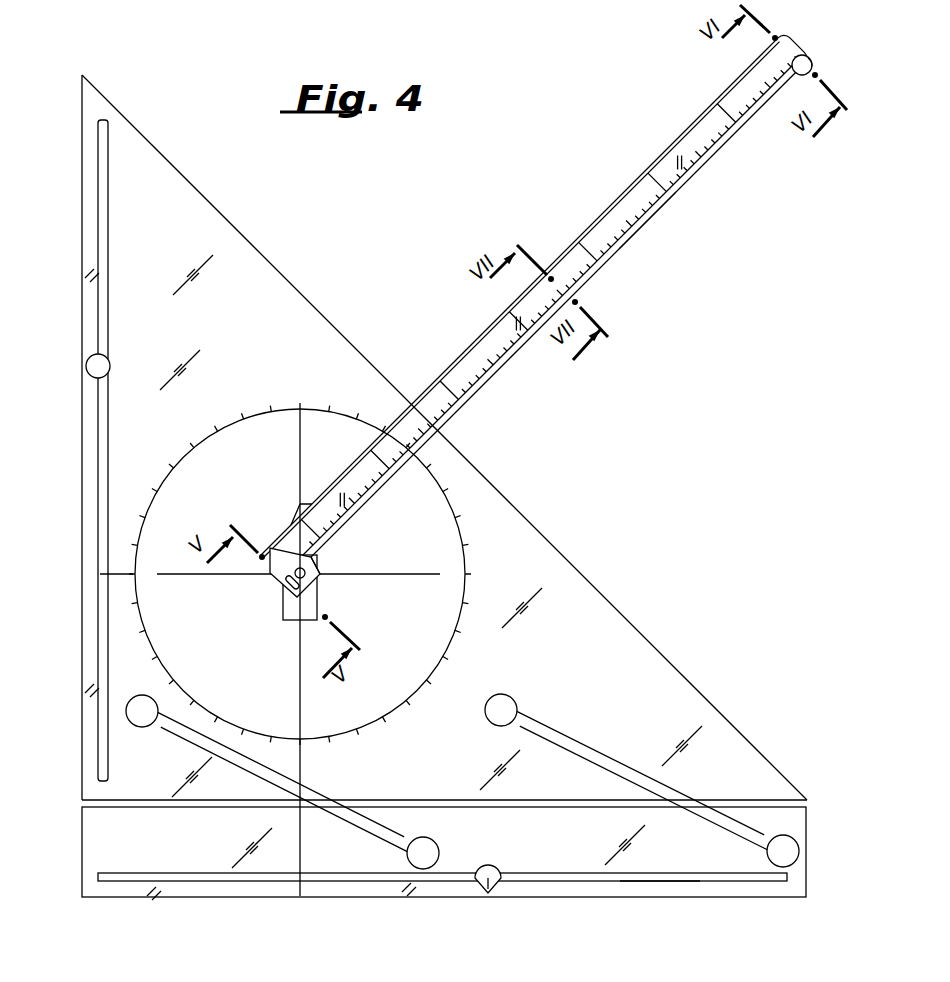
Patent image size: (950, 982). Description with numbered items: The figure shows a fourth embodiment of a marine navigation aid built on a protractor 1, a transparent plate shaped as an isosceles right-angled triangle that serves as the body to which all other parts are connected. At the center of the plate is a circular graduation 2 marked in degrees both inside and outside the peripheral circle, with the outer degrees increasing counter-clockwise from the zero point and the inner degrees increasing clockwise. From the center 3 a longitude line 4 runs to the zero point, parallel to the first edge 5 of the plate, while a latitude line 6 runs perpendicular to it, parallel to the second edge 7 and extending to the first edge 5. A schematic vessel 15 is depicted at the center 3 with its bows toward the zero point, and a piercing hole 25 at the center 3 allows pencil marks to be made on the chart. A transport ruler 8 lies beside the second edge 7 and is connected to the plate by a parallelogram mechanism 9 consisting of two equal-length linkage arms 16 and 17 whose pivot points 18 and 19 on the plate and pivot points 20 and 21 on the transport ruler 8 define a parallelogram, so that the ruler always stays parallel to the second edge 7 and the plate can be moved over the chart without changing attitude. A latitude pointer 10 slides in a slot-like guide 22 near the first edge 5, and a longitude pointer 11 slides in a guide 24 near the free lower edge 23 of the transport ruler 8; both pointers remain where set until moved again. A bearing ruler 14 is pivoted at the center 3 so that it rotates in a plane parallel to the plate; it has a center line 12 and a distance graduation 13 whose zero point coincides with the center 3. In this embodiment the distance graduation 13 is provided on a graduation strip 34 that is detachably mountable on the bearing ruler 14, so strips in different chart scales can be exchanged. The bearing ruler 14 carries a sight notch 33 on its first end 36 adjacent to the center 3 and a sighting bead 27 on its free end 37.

The protractor 1 is at (612, 610).
The circular 360° graduation 2 is at (276, 407).
The center 3 is at (306, 572).
The longitude line 4 is at (302, 492).
The first edge 5 is at (82, 500).
The latitude line 6 is at (210, 576).
The second edge 7 is at (460, 800).
The transport ruler 8 is at (690, 858).
The parallelogram mechanism 9 is at (720, 768).
The latitude pointer 10 is at (92, 358).
The longitude pointer 11 is at (488, 893).
The center line 12 is at (494, 376).
The distance graduation 13 is at (588, 262).
The bearing ruler 14 is at (636, 239).
The vessel 15 is at (288, 618).
The linkage arm 16 is at (322, 791).
The linkage arm 17 is at (585, 740).
The pivot point 18 is at (138, 714).
The pivot point 19 is at (504, 700).
The pivot point 20 is at (433, 855).
The pivot point 21 is at (790, 852).
The guide 22 is at (108, 238).
The lower edge 23 is at (580, 897).
The guide 24 is at (648, 881).
The piercing hole 25 is at (319, 586).
The sighting bead 27 is at (810, 58).
The sight notch 33 is at (287, 582).
The graduation strip 34 is at (655, 182).
The first end 36 is at (269, 545).
The free end 37 is at (826, 71).